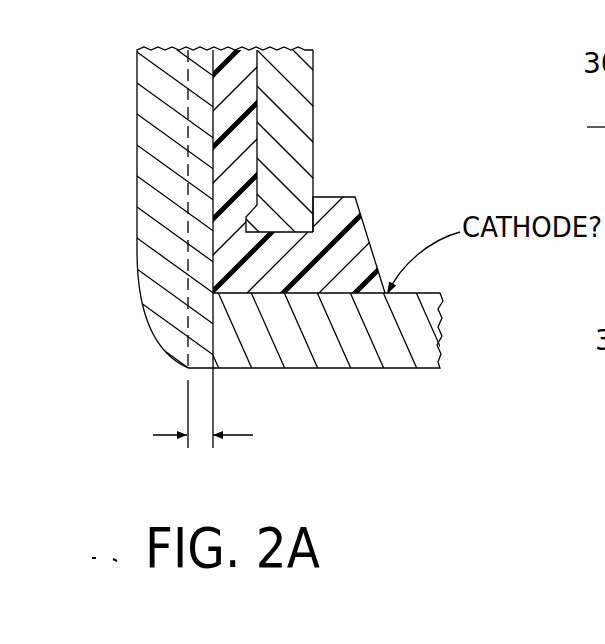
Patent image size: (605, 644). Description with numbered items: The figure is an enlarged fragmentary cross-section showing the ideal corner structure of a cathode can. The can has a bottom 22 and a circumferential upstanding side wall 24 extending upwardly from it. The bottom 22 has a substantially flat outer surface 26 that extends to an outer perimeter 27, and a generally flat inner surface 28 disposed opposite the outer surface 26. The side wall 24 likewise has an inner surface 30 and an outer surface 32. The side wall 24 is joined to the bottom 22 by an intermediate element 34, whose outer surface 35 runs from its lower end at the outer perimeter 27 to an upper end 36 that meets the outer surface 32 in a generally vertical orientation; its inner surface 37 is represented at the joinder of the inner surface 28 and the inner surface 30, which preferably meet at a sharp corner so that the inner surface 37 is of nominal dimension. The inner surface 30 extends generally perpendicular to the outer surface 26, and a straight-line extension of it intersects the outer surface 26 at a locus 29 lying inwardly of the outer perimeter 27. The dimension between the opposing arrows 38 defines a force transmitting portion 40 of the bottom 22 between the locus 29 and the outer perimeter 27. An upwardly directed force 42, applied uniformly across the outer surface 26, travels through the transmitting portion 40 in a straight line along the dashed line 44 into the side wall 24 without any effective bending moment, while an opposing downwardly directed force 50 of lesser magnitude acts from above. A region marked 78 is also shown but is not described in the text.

The bottom 22 is at (390, 355).
The side wall 24 is at (133, 73).
The outer surface 26 is at (347, 368).
The outer perimeter 27 is at (187, 372).
The inner surface 28 is at (413, 293).
The locus 29 is at (213, 370).
The inner surface 30 is at (215, 197).
The outer surface 32 is at (133, 193).
The intermediate element 34 is at (150, 344).
The outer surface 35 is at (143, 312).
The upper end 36 is at (128, 277).
The inner surface 37 is at (215, 290).
The opposing arrows 38 is at (240, 437).
The force transmitting portion 40 is at (199, 370).
The force 42 is at (186, 398).
The dashed line 44 is at (183, 122).
The downwardly directed force 50 is at (281, 128).
The interface region 78 is at (300, 286).